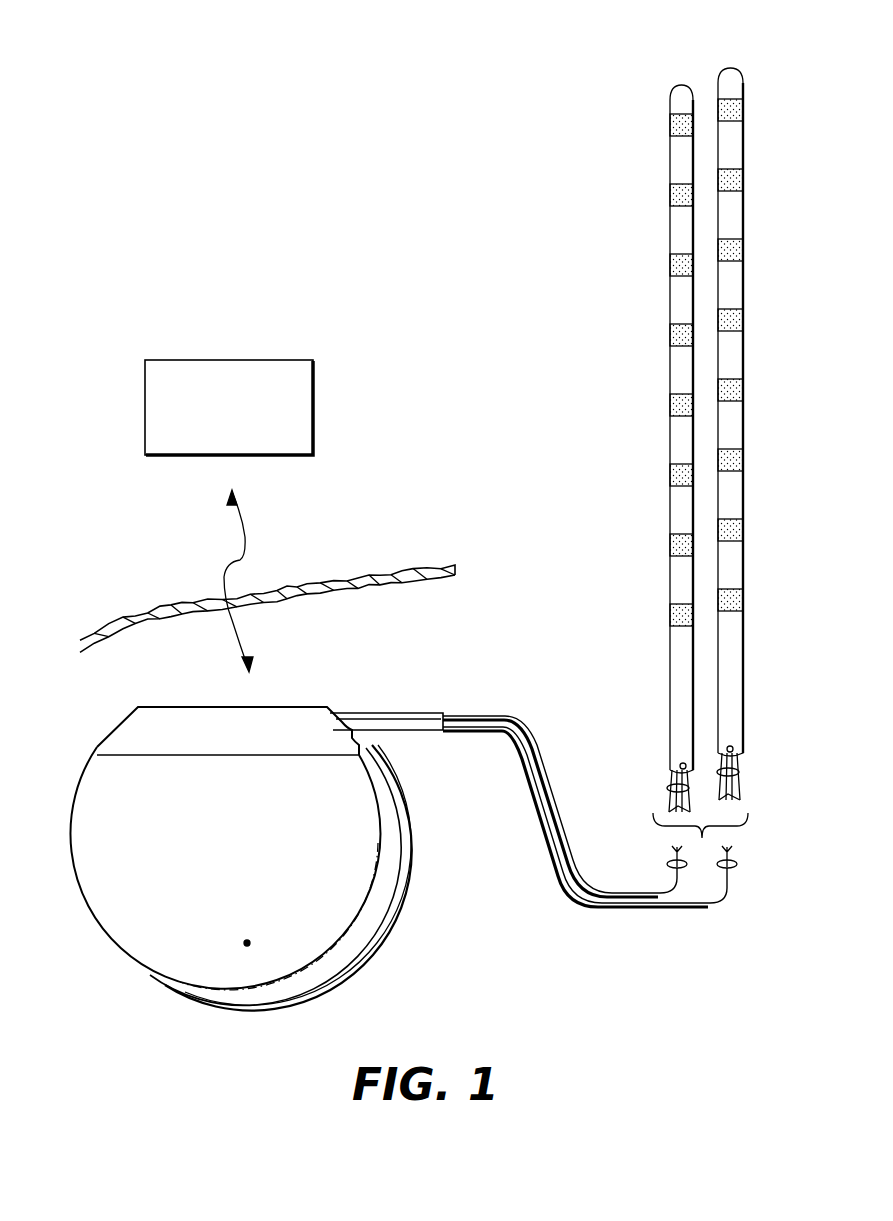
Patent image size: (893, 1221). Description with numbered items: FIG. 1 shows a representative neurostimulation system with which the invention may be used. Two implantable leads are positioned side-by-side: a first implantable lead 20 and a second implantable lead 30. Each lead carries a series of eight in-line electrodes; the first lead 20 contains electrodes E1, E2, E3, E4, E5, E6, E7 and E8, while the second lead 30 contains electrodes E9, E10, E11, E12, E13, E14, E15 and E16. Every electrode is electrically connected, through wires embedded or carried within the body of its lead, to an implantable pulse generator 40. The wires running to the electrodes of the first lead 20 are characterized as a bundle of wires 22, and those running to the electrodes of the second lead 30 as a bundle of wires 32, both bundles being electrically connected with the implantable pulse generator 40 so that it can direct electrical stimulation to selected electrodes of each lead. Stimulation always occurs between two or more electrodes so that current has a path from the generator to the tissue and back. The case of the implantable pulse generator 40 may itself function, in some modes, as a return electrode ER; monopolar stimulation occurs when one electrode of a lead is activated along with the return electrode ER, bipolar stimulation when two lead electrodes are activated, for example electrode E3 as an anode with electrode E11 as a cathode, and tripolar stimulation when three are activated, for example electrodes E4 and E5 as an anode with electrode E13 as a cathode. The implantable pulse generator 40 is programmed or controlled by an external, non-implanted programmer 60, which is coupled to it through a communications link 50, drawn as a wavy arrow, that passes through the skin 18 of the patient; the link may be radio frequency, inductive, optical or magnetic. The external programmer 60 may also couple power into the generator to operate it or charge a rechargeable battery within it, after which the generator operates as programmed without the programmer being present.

The skin 18 is at (413, 568).
The first implantable lead 20 is at (681, 84).
The bundle of wires 22 is at (667, 788).
The second implantable lead 30 is at (728, 69).
The bundle of wires 32 is at (740, 775).
The implantable pulse generator 40 is at (102, 738).
The communications link 50 is at (250, 525).
The external programmer 60 is at (314, 407).
The electrode E1 is at (664, 126).
The electrode E2 is at (664, 196).
The electrode E3 is at (664, 266).
The electrode E4 is at (664, 336).
The electrode E5 is at (664, 406).
The electrode E6 is at (664, 476).
The electrode E7 is at (664, 546).
The electrode E8 is at (664, 616).
The electrode E9 is at (745, 111).
The electrode E10 is at (748, 181).
The electrode E11 is at (748, 251).
The electrode E12 is at (748, 321).
The electrode E13 is at (748, 391).
The electrode E14 is at (748, 461).
The electrode E15 is at (748, 531).
The electrode E16 is at (748, 601).
The return electrode ER is at (247, 943).